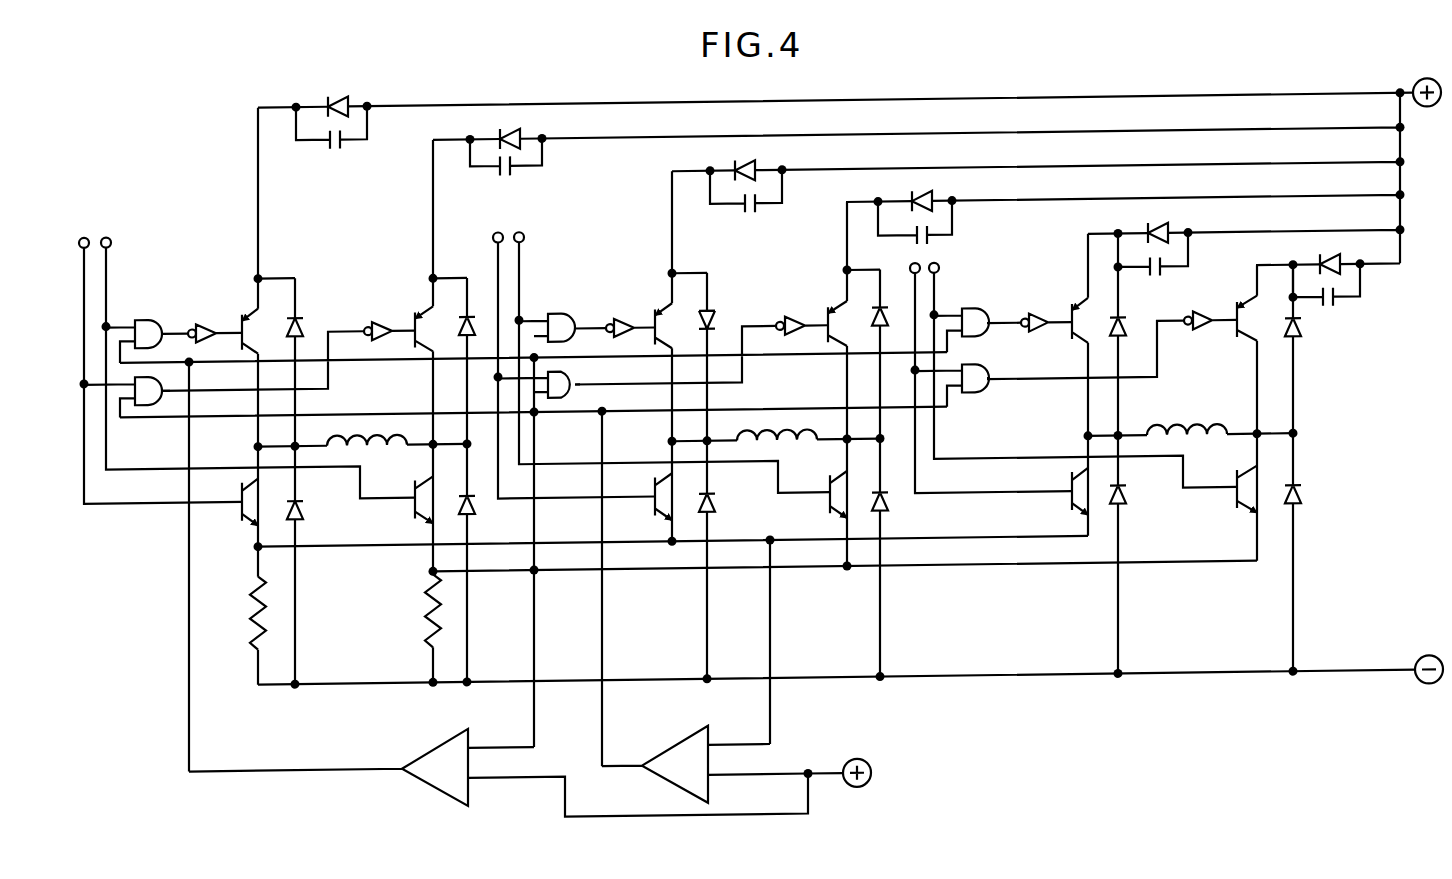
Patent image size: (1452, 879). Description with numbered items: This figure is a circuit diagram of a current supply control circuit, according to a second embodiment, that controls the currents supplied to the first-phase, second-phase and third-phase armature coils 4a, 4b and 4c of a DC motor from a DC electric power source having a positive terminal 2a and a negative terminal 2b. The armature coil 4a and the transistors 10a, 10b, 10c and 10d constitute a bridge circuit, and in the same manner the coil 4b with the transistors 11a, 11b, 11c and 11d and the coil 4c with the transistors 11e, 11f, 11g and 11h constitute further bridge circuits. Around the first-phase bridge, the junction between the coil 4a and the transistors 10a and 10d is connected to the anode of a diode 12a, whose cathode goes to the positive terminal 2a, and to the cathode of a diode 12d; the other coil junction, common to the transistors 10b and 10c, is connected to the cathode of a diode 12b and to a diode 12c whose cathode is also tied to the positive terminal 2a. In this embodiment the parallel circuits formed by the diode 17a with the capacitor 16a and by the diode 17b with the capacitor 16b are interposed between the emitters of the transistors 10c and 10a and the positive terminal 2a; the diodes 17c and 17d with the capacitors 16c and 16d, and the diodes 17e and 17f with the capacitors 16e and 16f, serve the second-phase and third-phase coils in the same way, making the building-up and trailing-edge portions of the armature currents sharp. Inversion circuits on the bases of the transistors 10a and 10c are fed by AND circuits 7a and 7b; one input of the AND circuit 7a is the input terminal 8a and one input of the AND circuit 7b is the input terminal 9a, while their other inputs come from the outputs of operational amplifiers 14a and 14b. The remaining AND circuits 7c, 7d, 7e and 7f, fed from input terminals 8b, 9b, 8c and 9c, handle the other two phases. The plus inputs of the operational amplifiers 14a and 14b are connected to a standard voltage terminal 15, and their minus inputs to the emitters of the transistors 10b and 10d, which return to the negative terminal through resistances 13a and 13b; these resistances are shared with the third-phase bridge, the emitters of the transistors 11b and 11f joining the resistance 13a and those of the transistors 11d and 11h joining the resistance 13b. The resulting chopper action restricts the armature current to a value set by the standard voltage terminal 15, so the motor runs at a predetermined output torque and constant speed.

The positive terminal 2a is at (1417, 98).
The negative terminal 2b is at (1431, 702).
The first-phase armature coil 4a is at (380, 452).
The second-phase armature coil 4b is at (790, 452).
The third-phase armature coil 4c is at (1198, 452).
The AND circuit 7a is at (150, 322).
The AND circuit 7b is at (150, 407).
The AND circuit 7c is at (563, 321).
The AND circuit 7d is at (564, 405).
The AND circuit 7e is at (982, 349).
The AND circuit 7f is at (982, 405).
The input terminal 8a is at (106, 239).
The input terminal 8b is at (519, 239).
The input terminal 8c is at (938, 285).
The input terminal 9a is at (84, 239).
The input terminal 9b is at (497, 239).
The input terminal 9c is at (920, 276).
The transistor 10a is at (243, 317).
The transistor 10b is at (416, 524).
The transistor 10c is at (416, 317).
The transistor 10d is at (243, 524).
The transistor 11a is at (656, 317).
The transistor 11b is at (831, 524).
The transistor 11c is at (829, 317).
The transistor 11d is at (656, 524).
The transistor 11e is at (1073, 317).
The transistor 11f is at (1238, 524).
The transistor 11g is at (1238, 317).
The transistor 11h is at (1073, 524).
The diode 12a is at (300, 322).
The diode 12b is at (476, 510).
The diode 12c is at (470, 323).
The diode 12d is at (304, 512).
The resistance 13a is at (425, 620).
The resistance 13b is at (250, 620).
The operational amplifier 14a is at (435, 752).
The operational amplifier 14b is at (678, 752).
The standard voltage terminal 15 is at (870, 793).
The capacitor 16a is at (522, 180).
The capacitor 16b is at (342, 156).
The capacitor 16c is at (932, 252).
The capacitor 16d is at (760, 220).
The capacitor 16e is at (1336, 324).
The capacitor 16f is at (1164, 288).
The diode 17a is at (516, 136).
The diode 17b is at (342, 100).
The back-flow preventing diode 17c is at (936, 204).
The back-flow preventing diode 17d is at (760, 170).
The diode 17e is at (1332, 272).
The diode 17f is at (1172, 238).